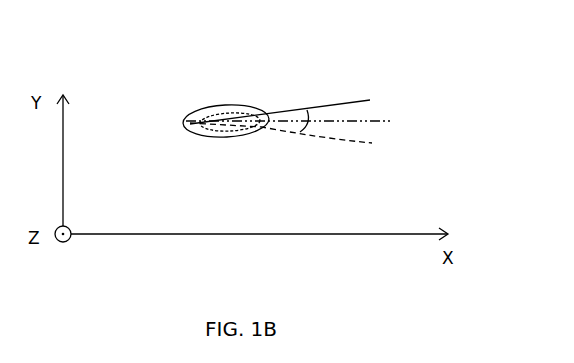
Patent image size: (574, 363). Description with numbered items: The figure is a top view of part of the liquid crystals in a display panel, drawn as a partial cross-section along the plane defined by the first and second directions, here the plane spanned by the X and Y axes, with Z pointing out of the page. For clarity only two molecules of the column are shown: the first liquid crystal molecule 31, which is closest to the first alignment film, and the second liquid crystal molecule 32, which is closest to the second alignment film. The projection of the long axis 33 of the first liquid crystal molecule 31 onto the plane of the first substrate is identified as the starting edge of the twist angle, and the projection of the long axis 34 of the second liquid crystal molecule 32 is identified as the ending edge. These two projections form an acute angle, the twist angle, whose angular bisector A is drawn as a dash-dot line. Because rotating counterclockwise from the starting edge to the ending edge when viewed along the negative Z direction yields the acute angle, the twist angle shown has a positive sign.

The first liquid crystal molecule 31 is at (200, 108).
The second liquid crystal molecule 32 is at (195, 130).
The long axis of the first liquid crystal molecule 33 is at (208, 132).
The long axis of the second liquid crystal molecule 34 is at (247, 110).
The angular bisector A is at (367, 120).